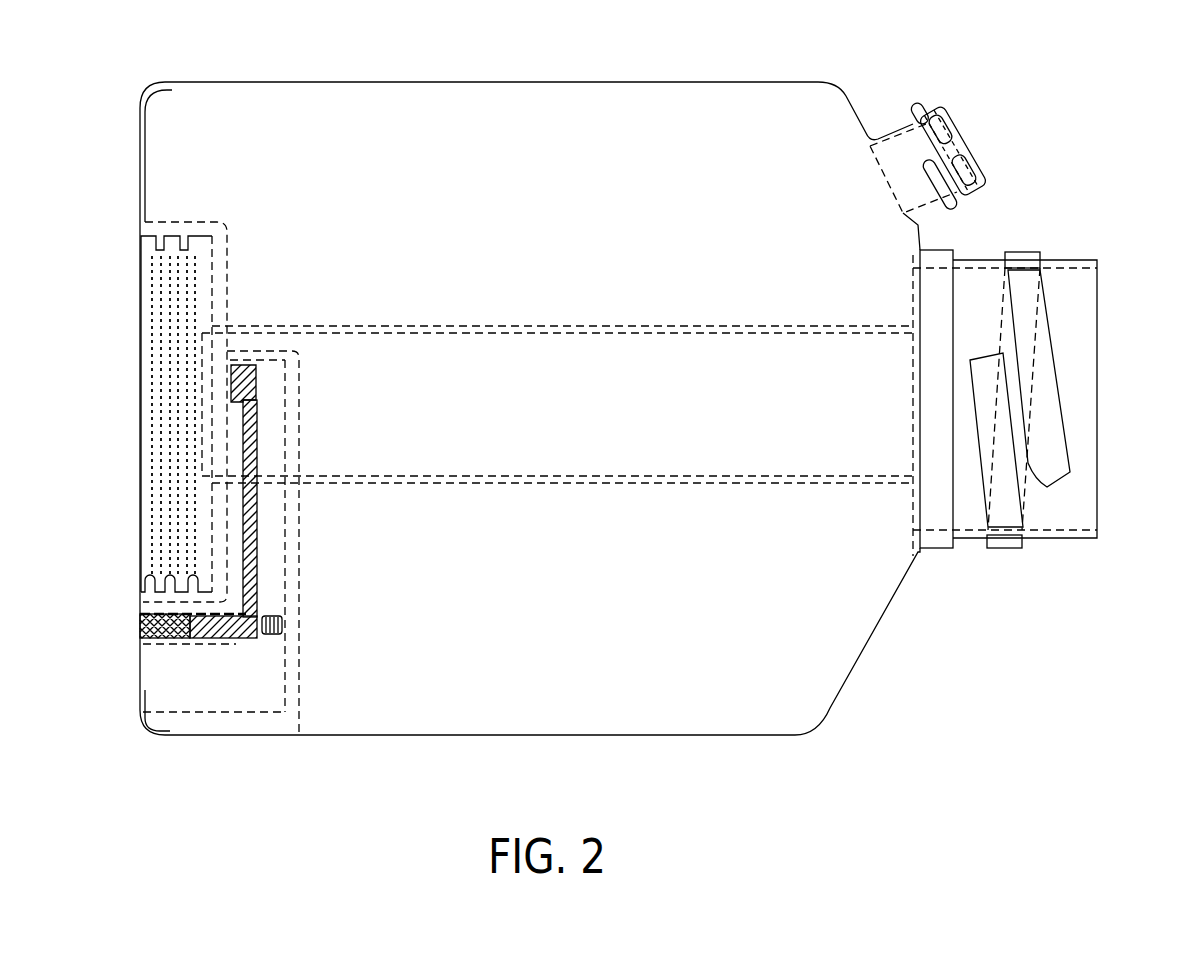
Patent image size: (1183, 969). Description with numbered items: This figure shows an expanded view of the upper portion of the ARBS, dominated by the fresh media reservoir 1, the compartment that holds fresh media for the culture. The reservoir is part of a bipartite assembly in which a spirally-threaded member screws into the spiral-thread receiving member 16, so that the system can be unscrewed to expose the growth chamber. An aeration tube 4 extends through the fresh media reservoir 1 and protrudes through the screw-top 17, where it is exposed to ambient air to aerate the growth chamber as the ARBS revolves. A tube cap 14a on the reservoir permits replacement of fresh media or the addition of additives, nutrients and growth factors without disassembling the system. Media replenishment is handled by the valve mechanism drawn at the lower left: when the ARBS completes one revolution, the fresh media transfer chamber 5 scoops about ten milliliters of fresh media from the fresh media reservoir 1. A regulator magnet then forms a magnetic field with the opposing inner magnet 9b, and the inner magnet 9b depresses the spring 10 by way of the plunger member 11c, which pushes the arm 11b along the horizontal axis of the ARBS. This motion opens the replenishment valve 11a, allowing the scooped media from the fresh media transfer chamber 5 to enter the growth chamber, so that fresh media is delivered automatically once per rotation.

The fresh media reservoir 1 is at (625, 103).
The aeration tube 4 is at (552, 352).
The fresh media transfer chamber 5 is at (263, 690).
The inner magnet 9b is at (140, 632).
The spring 10 is at (285, 627).
The replenishment valve 11a is at (228, 382).
The arm 11b is at (258, 515).
The plunger member 11c is at (238, 640).
The tube cap 14a is at (903, 128).
The spiral-thread receiving member 16 is at (78, 238).
The screw-top 17 is at (1124, 248).